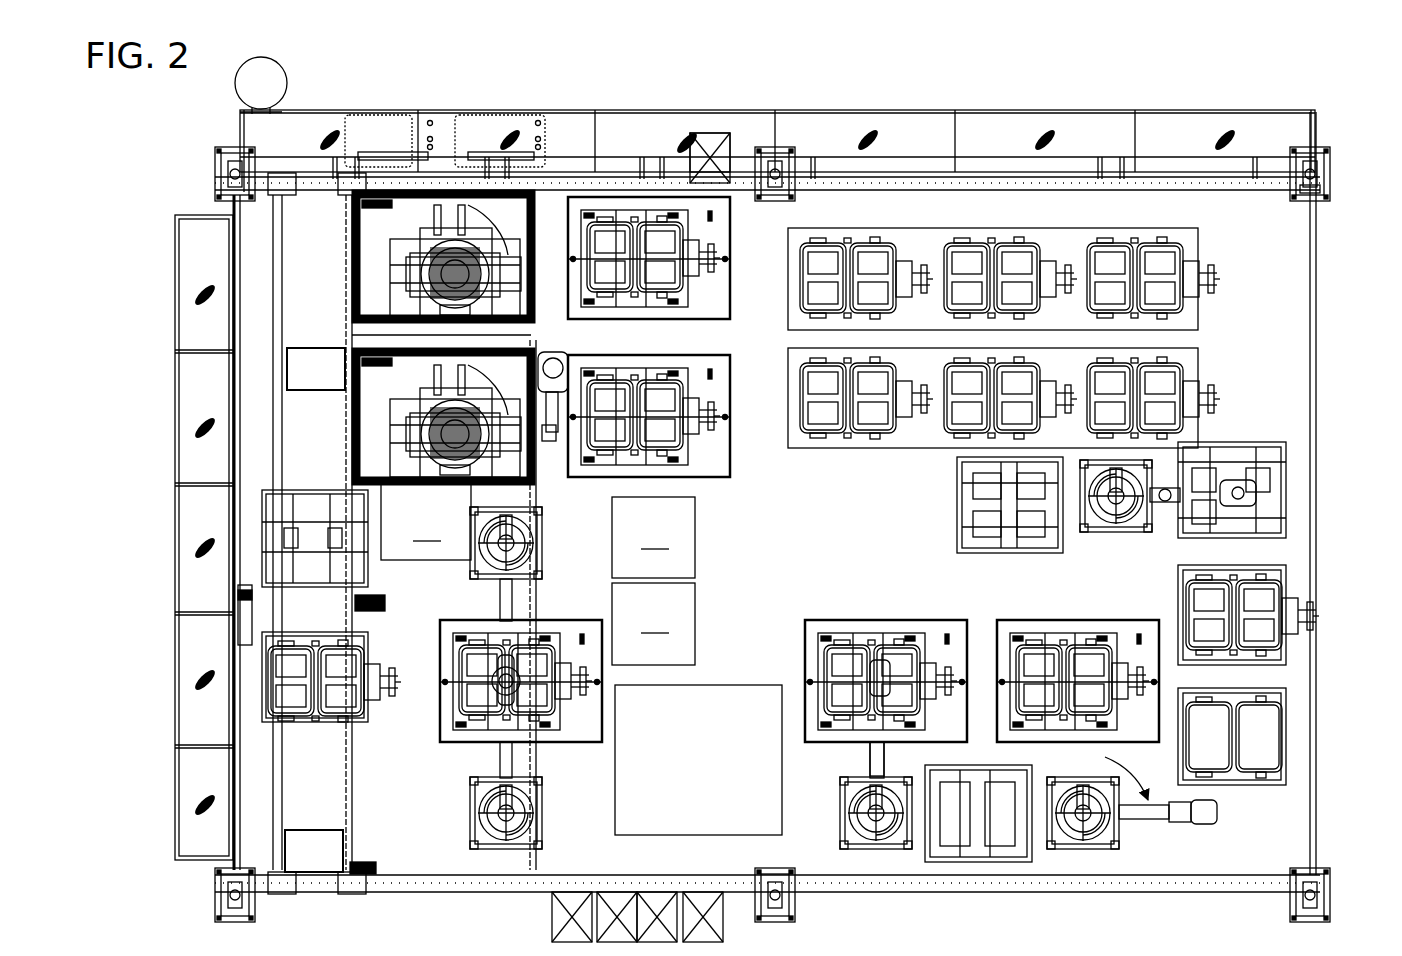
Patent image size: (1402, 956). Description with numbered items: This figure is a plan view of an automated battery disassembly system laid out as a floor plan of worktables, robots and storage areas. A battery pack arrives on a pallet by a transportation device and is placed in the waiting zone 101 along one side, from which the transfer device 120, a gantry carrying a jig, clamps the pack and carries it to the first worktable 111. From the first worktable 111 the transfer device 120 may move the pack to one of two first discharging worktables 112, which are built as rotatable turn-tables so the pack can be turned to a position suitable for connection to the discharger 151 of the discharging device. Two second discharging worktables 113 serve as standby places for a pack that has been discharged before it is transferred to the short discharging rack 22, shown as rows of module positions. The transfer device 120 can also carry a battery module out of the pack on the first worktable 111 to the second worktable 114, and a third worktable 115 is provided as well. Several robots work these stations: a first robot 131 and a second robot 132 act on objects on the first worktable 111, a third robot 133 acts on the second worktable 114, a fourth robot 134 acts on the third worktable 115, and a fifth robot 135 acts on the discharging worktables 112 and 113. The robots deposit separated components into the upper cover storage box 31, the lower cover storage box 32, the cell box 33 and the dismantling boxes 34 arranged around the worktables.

The short discharging rack 22 is at (862, 225).
The upper cover storage box 31 is at (1294, 728).
The lower cover storage box 32 is at (1294, 580).
The cell box 33 is at (1294, 492).
The dismantling box 34 is at (538, 571).
The waiting zone 101 is at (230, 660).
The first worktable 111 is at (560, 750).
The first discharging worktable 112 is at (330, 282).
The second discharging worktable 113 is at (740, 265).
The second worktable 114 is at (1030, 612).
The third worktable 115 is at (940, 492).
The transfer device 120 is at (388, 715).
The first robot 131 is at (556, 835).
The second robot 132 is at (460, 578).
The third robot 133 is at (830, 835).
The fourth robot 134 is at (1120, 540).
The fifth robot 135 is at (552, 450).
The discharger 151 is at (505, 108).